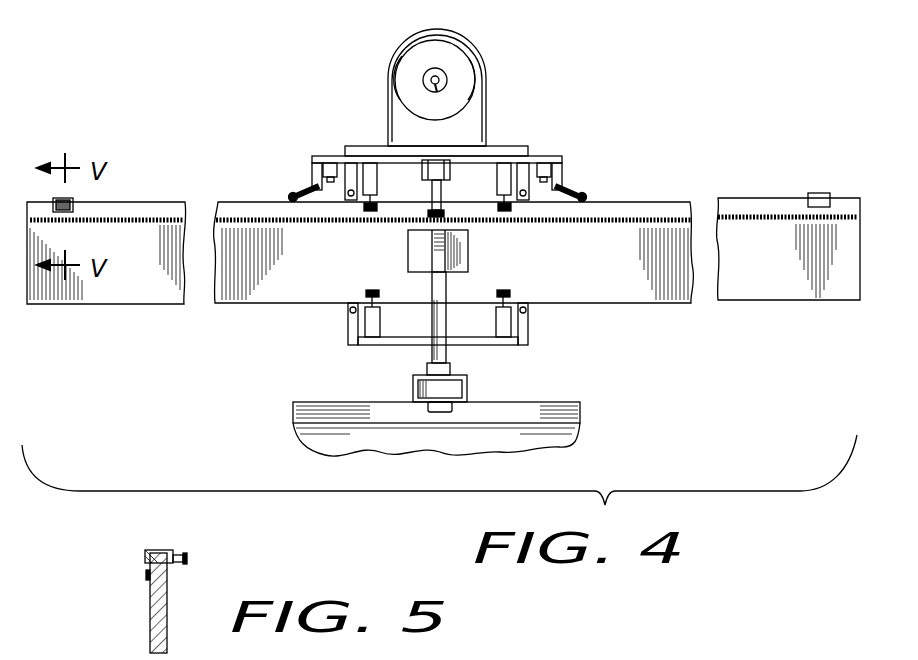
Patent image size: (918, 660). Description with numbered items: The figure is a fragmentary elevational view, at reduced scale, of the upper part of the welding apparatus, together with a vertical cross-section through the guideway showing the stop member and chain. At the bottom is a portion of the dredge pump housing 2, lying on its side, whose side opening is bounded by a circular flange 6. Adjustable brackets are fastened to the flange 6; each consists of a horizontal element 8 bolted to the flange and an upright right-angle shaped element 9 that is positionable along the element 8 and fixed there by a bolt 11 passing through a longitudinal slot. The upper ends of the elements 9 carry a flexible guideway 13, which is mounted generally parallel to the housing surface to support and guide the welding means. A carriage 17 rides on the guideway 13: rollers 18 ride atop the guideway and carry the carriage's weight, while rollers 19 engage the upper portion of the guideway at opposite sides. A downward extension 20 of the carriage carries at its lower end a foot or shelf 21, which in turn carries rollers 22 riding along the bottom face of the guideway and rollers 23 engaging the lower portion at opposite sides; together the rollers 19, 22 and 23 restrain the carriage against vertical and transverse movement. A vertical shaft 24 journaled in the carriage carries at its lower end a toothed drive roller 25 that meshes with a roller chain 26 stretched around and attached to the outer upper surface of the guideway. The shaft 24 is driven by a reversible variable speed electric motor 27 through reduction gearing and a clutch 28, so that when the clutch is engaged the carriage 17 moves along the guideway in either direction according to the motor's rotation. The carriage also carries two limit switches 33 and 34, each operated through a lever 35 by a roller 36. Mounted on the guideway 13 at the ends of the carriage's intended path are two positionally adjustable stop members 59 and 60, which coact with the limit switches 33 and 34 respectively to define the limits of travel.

In FIG. 4, the dredge pump housing 2 is at (580, 430).
In FIG. 4, the circular flange 6 is at (575, 402).
In FIG. 4, the horizontal element 8 is at (413, 395).
In FIG. 4, the upright generally right-angle shaped element 9 is at (447, 358).
In FIG. 4, the bolt 11 is at (427, 368).
In FIG. 4, the flexible guideway 13 is at (102, 304).
In FIG. 5, the flexible guideway 13 is at (150, 630).
In FIG. 4, the carriage 17 is at (505, 146).
In FIG. 4, the rollers 18 is at (350, 203).
In FIG. 4, the rollers 19 is at (370, 212).
In FIG. 4, the downward extension 20 is at (408, 320).
In FIG. 4, the foot or shelf 21 is at (497, 346).
In FIG. 4, the rollers 22 is at (346, 310).
In FIG. 4, the rollers 23 is at (371, 290).
In FIG. 4, the vertical shaft 24 is at (432, 196).
In FIG. 4, the toothed drive roller 25 is at (468, 228).
In FIG. 4, the roller chain 26 is at (185, 215).
In FIG. 5, the roller chain 26 is at (146, 576).
In FIG. 4, the reversible variable speed electric motor 27 is at (455, 50).
In FIG. 4, the clutch 28 is at (450, 171).
In FIG. 4, the limit switch 33 is at (545, 165).
In FIG. 4, the limit switch 34 is at (330, 163).
In FIG. 4, the lever 35 is at (310, 186).
In FIG. 4, the roller 36 is at (289, 196).
In FIG. 4, the stop member 59 is at (818, 193).
In FIG. 4, the stop member 60 is at (74, 203).
In FIG. 5, the stop member 60 is at (170, 551).